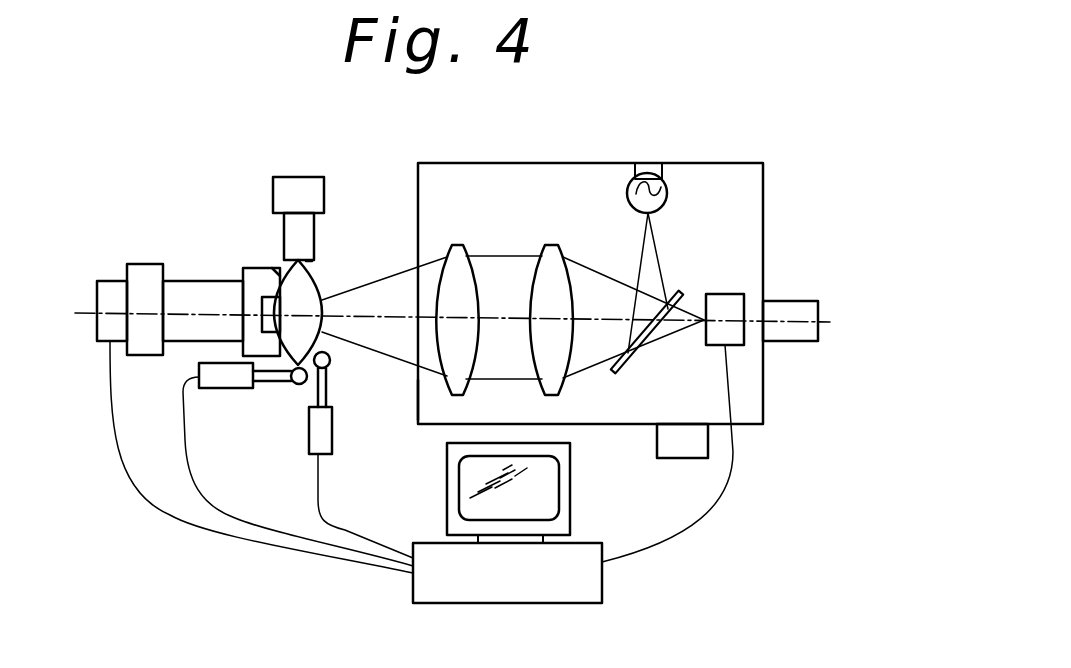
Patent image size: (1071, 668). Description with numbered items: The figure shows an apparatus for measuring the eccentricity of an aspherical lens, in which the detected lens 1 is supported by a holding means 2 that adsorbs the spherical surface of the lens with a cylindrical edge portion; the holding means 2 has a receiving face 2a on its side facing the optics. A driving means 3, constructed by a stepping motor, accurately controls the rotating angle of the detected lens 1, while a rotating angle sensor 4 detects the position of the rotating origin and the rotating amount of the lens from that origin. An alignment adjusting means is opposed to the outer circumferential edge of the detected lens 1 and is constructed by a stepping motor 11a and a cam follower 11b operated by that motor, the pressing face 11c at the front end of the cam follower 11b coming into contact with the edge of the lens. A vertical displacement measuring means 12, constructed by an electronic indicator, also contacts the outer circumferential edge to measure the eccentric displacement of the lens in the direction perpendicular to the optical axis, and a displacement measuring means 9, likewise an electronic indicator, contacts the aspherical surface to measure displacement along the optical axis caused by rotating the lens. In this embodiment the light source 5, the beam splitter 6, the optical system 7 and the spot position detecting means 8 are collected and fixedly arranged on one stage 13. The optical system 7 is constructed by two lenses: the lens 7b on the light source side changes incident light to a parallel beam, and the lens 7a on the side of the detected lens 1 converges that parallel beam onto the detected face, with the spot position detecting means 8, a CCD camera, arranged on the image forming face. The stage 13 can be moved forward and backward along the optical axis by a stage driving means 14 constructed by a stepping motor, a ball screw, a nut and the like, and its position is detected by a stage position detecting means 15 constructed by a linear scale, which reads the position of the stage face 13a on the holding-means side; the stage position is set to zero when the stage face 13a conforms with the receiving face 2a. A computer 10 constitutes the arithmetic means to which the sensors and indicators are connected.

The detected lens 1 is at (314, 343).
The holding means 2 is at (247, 276).
The receiving face 2a is at (276, 272).
The driving means 3 is at (185, 292).
The rotating angle sensor 4 is at (110, 288).
The light source 5 is at (668, 198).
The beam splitter 6 is at (676, 292).
The optical system 7 is at (504, 280).
The lens 7a is at (460, 258).
The lens 7b is at (551, 258).
The spot position detecting means 8 is at (728, 294).
The displacement measuring means 9 is at (323, 432).
The computer 10 is at (580, 553).
The stepping motor 11a is at (305, 184).
The cam follower 11b is at (310, 235).
The pressing face 11c is at (318, 268).
The vertical displacement measuring means 12 is at (231, 382).
The stage 13 is at (437, 418).
The stage face 13a is at (418, 398).
The stage driving means 14 is at (795, 301).
The stage position detecting means 15 is at (683, 446).